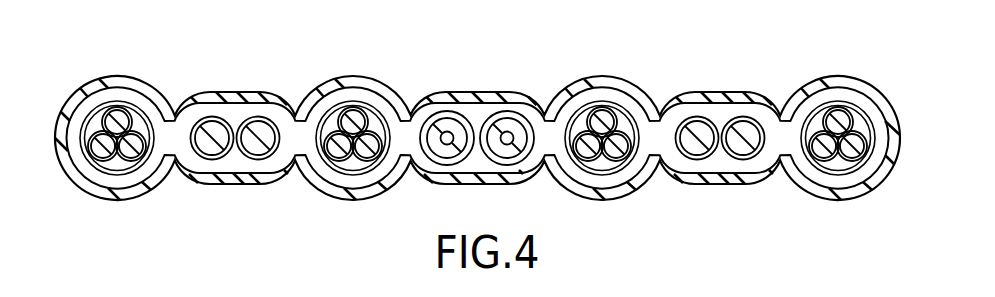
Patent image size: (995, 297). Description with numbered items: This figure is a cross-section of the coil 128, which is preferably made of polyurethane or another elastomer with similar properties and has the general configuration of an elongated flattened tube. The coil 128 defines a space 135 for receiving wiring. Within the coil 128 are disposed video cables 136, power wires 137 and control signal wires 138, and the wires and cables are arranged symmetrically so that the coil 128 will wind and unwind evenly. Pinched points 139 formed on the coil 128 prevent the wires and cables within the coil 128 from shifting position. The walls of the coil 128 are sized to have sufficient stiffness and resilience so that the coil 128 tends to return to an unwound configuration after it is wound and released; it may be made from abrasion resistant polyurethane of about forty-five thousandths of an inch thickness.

The coil 128 is at (885, 88).
The space 135 is at (635, 112).
The video cables 136 is at (507, 145).
The power wires 137 is at (256, 134).
The control signal wires 138 is at (120, 122).
The pinched points 139 is at (292, 110).